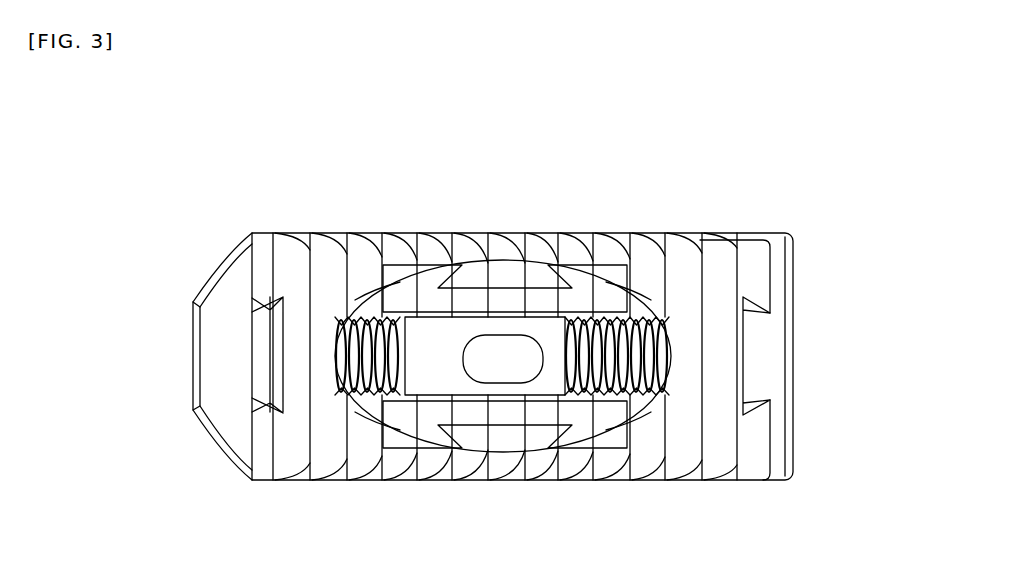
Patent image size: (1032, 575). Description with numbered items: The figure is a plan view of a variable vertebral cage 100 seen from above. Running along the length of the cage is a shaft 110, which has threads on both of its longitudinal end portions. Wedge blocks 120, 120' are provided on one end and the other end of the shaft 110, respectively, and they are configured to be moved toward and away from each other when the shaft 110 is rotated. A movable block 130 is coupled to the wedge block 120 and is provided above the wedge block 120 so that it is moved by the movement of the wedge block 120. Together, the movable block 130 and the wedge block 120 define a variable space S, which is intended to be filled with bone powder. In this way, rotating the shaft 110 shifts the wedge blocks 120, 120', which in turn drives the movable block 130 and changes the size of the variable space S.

The variable vertebral cage 100 is at (272, 133).
The shaft 110 is at (440, 332).
The wedge block 120 is at (213, 324).
The wedge block 120' is at (808, 362).
The movable block 130 is at (676, 227).
The variable space S is at (441, 411).